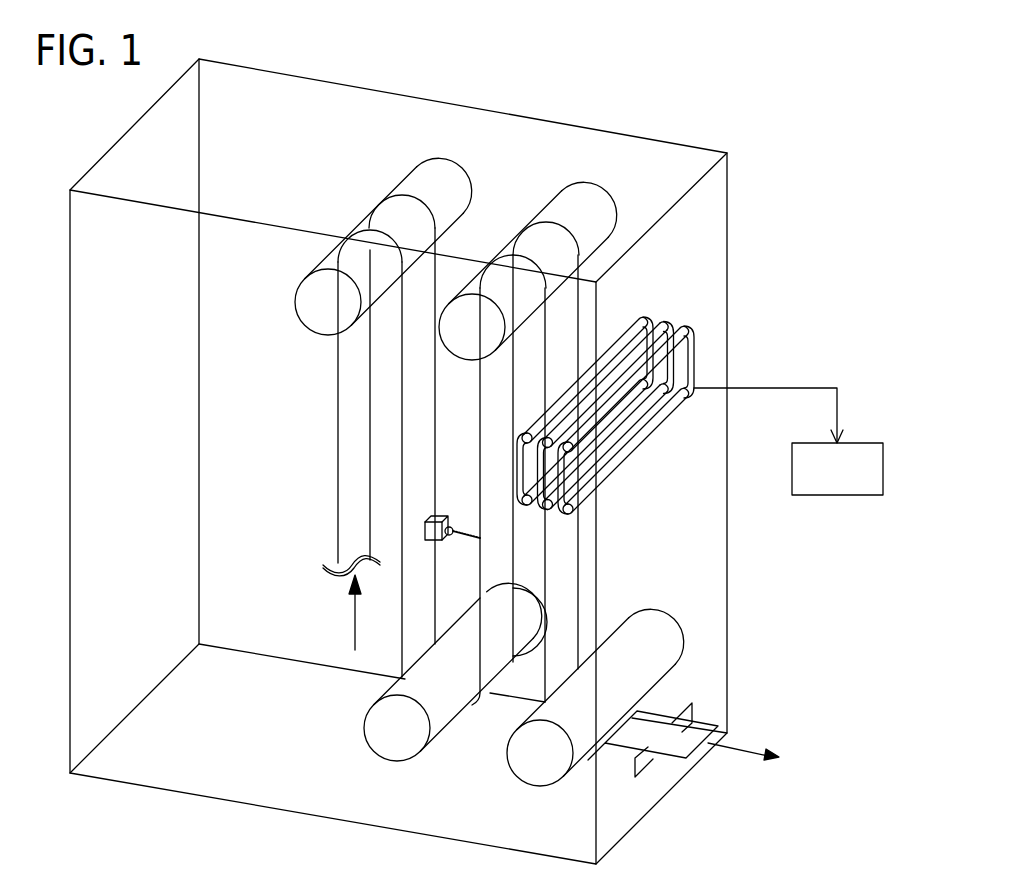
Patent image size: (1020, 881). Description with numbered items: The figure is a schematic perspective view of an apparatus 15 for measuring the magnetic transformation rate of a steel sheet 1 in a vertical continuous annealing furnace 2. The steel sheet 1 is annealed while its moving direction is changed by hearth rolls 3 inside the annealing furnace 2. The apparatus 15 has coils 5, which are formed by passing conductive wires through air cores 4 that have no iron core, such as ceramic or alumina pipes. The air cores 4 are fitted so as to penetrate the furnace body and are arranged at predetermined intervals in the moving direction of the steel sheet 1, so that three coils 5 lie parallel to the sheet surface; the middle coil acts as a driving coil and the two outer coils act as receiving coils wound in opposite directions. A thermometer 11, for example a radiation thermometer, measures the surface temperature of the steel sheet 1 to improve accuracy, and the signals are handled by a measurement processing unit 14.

The steel sheet 1 is at (352, 420).
The annealing furnace 2 is at (72, 458).
The hearth rolls 3 is at (313, 299).
The air core 4 is at (643, 435).
The coils 5 is at (695, 360).
The thermometer 11 is at (440, 519).
The measurement processing unit 14 is at (836, 484).
The apparatus for measuring magnetic transformation 15 is at (780, 153).